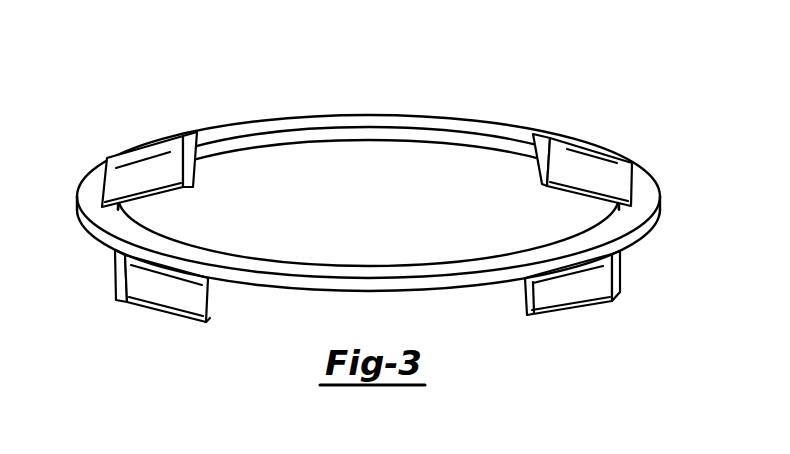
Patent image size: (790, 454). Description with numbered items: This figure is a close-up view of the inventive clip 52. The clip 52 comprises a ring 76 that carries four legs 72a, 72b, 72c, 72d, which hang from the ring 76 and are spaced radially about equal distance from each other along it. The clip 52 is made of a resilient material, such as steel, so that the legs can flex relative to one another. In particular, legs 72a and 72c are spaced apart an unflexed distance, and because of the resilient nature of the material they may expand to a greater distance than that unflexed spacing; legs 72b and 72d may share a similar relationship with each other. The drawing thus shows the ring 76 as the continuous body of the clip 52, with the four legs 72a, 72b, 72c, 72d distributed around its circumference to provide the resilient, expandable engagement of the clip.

The clip 52 is at (432, 118).
The leg 72a is at (156, 290).
The leg 72b is at (157, 170).
The leg 72c is at (590, 175).
The leg 72d is at (552, 296).
The ring 76 is at (373, 287).